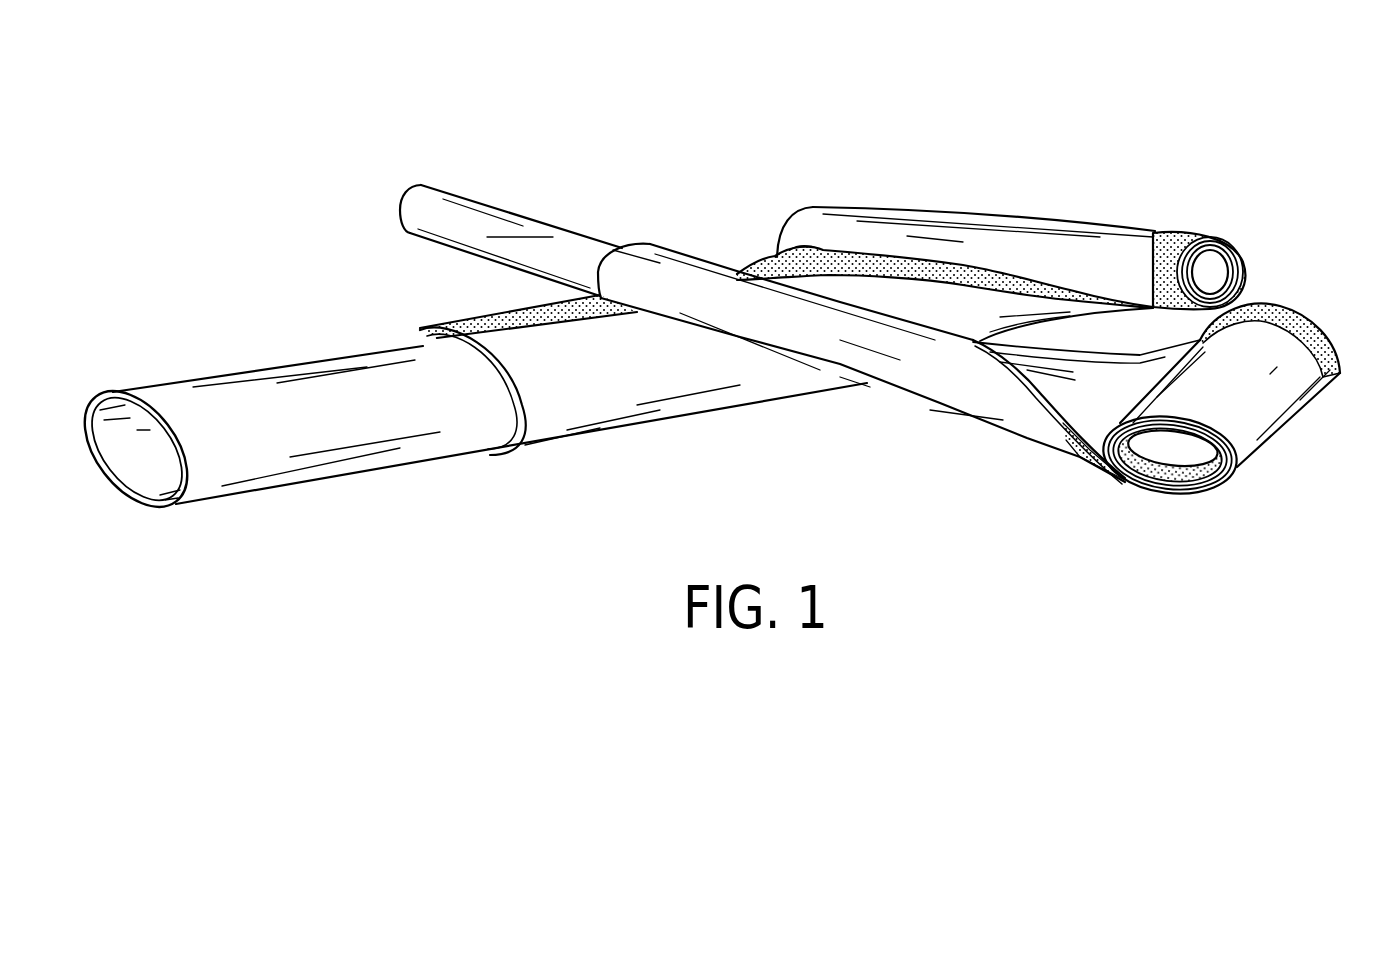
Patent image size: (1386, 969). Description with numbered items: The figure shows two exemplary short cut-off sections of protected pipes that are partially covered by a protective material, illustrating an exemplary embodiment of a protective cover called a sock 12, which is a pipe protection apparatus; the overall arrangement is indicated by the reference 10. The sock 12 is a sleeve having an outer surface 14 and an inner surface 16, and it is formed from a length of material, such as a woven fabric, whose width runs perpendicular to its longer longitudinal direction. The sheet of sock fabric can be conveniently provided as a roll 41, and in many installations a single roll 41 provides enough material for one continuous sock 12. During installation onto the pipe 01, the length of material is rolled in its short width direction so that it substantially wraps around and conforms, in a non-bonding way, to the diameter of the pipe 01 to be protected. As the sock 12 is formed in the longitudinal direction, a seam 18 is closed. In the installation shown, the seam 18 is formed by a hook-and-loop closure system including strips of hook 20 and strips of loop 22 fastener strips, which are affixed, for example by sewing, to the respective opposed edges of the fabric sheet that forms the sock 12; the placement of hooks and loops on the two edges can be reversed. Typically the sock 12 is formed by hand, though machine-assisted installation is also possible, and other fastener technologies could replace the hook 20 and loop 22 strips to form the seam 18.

The protective wrapping system 10 is at (719, 317).
The pipe 01 is at (415, 212).
The sock 12 is at (887, 367).
The outer surface 14 is at (587, 380).
The inner surface 16 is at (1068, 397).
The seam 18 is at (483, 328).
The strips of hook 20 is at (1183, 238).
The strips of loop 22 is at (1097, 440).
The roll 41 is at (1213, 277).